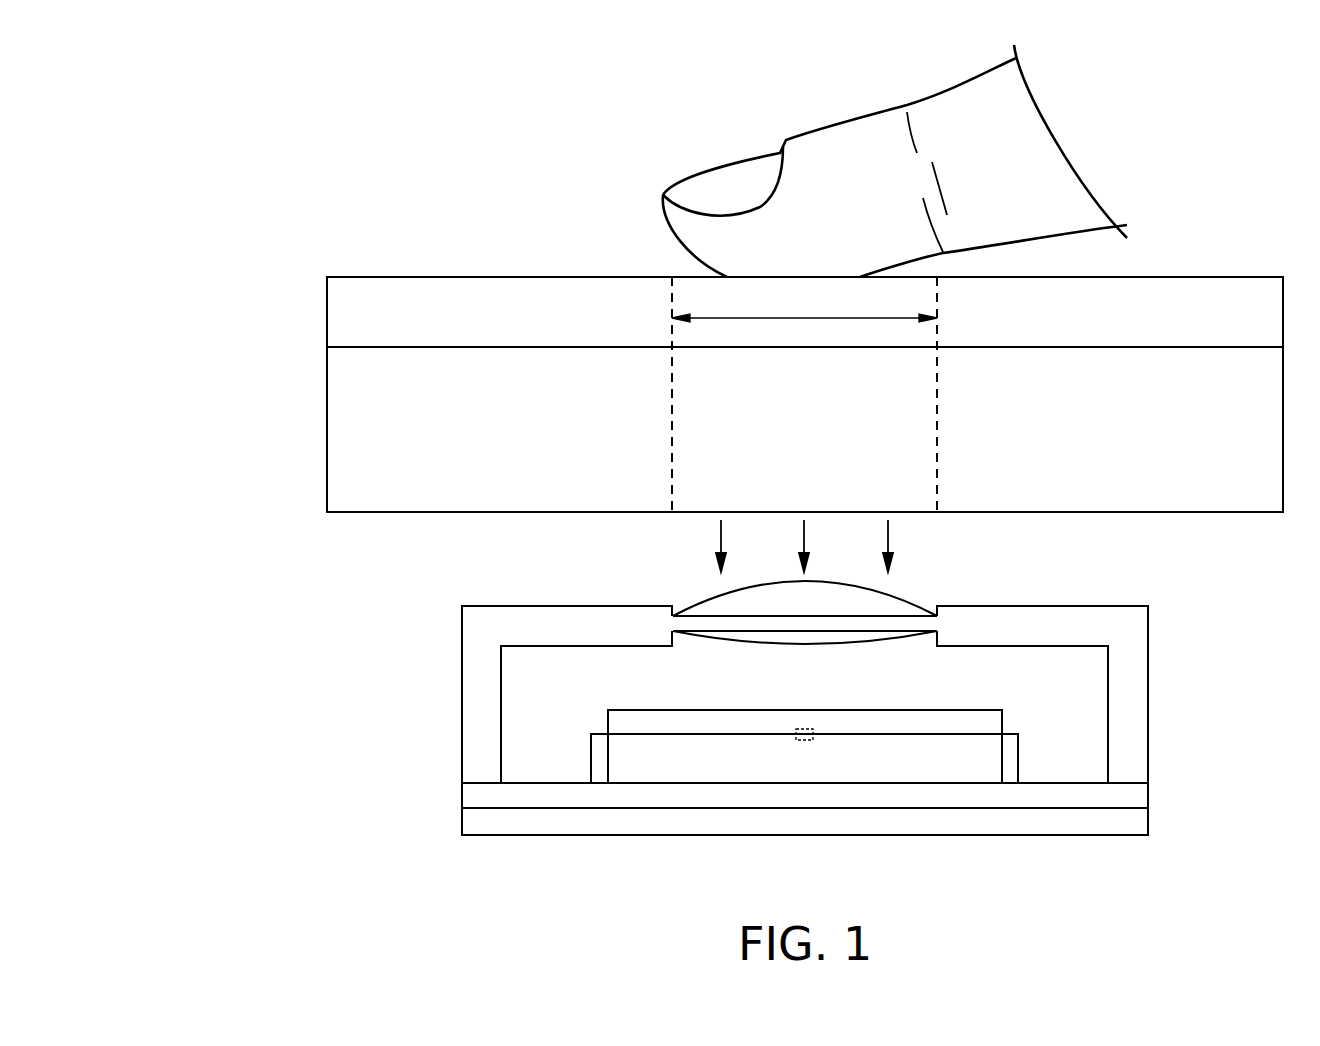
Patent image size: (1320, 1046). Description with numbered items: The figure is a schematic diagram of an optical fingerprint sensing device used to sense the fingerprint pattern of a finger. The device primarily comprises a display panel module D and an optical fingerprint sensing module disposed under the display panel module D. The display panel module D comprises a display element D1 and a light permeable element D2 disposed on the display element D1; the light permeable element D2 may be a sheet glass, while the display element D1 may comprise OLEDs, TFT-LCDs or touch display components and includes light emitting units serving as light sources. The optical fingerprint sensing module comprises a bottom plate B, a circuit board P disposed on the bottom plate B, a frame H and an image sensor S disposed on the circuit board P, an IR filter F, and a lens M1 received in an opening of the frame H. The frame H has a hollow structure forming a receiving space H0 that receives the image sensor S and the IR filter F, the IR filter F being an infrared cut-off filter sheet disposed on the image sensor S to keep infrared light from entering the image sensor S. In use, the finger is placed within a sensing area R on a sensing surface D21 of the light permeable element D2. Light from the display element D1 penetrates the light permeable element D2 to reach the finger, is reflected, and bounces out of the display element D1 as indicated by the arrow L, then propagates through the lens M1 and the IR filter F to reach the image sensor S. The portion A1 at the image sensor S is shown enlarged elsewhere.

The display panel module D is at (751, 394).
The display element D1 is at (771, 429).
The light permeable element D2 is at (327, 313).
The sensing surface D21 is at (367, 277).
The sensing area R is at (804, 394).
The arrow indicating reflected light L is at (721, 536).
The lens M1 is at (903, 590).
The frame H is at (470, 655).
The receiving space H0 is at (530, 708).
The IR filter F is at (997, 722).
The image sensor S is at (1013, 759).
The circuit board P is at (470, 795).
The bottom plate B is at (470, 825).
The portion A1 is at (803, 740).